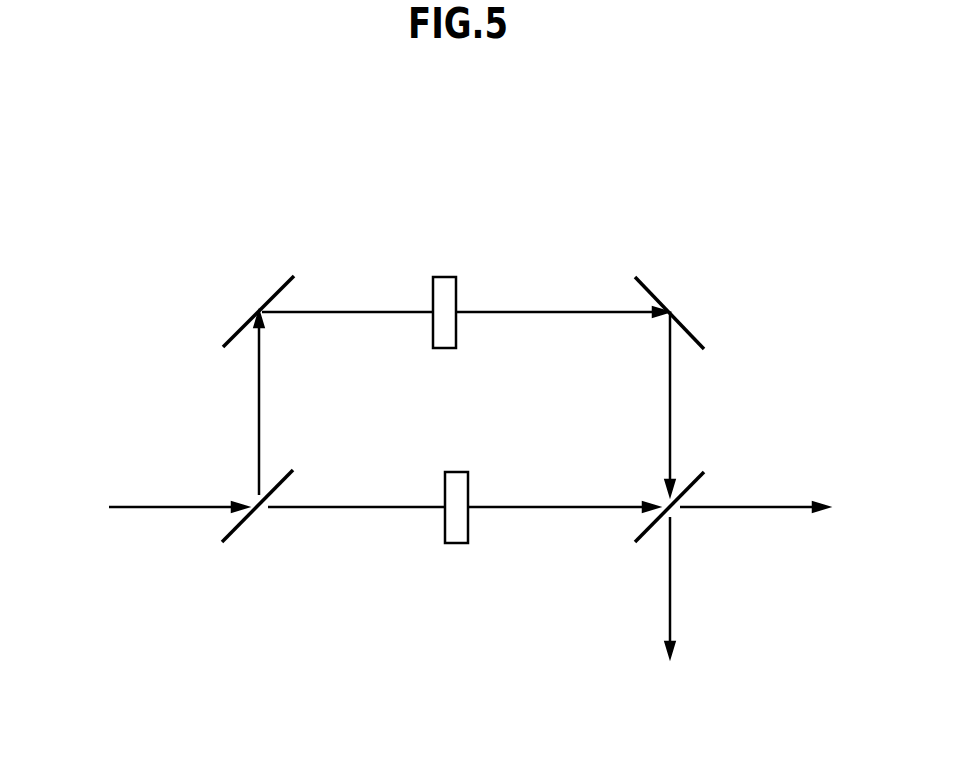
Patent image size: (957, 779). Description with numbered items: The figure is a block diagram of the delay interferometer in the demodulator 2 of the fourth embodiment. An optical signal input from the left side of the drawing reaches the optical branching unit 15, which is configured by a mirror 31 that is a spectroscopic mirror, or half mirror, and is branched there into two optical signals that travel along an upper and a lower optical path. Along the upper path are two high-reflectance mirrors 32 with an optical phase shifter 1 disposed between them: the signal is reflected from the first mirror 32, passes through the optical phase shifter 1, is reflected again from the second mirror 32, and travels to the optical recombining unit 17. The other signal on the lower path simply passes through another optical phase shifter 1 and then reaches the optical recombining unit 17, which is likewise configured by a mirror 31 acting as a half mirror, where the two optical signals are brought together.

The demodulator 2 is at (513, 130).
The optical phase shifter 1 is at (445, 277).
The optical branching unit 15 is at (248, 498).
The optical recombining unit 17 is at (640, 478).
The mirror 31 is at (280, 470).
The mirror 32 is at (282, 277).